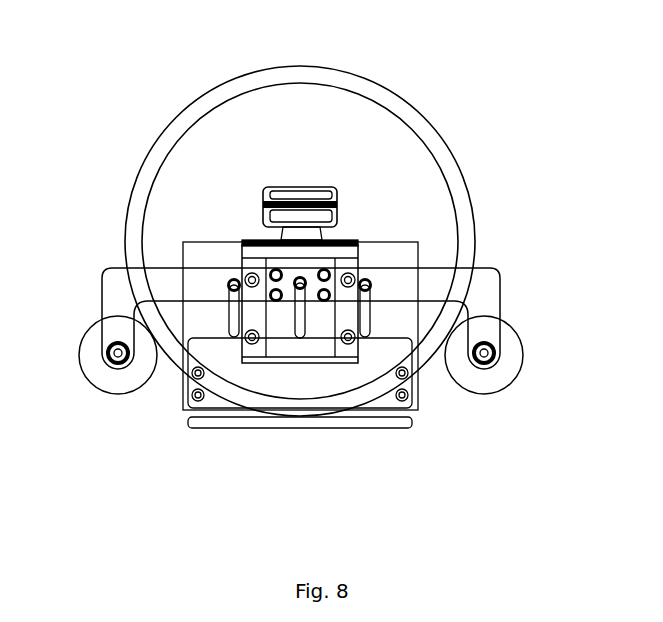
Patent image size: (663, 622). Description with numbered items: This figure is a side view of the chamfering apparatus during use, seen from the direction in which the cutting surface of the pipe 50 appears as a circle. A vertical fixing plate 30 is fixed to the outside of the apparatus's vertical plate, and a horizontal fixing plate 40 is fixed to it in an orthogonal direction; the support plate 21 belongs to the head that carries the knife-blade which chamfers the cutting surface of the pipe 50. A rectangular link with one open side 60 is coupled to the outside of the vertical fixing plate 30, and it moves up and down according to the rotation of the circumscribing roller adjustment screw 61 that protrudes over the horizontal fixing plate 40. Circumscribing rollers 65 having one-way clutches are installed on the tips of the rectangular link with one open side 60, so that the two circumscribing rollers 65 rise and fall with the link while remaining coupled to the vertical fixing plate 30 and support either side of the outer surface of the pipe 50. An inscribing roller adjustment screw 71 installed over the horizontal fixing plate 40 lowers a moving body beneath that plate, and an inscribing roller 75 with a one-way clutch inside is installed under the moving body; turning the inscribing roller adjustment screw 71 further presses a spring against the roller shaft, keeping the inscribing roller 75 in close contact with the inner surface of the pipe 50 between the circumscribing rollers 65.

The support plate 21 is at (228, 430).
The vertical fixing plate 30 is at (416, 255).
The horizontal fixing plate 40 is at (343, 247).
The pipe 50 is at (420, 128).
The rectangular link with one open side 60 is at (127, 288).
The circumscribing roller adjustment screw 61 is at (270, 217).
The circumscribing rollers 65 is at (513, 355).
The inscribing roller adjustment screw 71 is at (293, 197).
The inscribing roller 75 is at (315, 378).